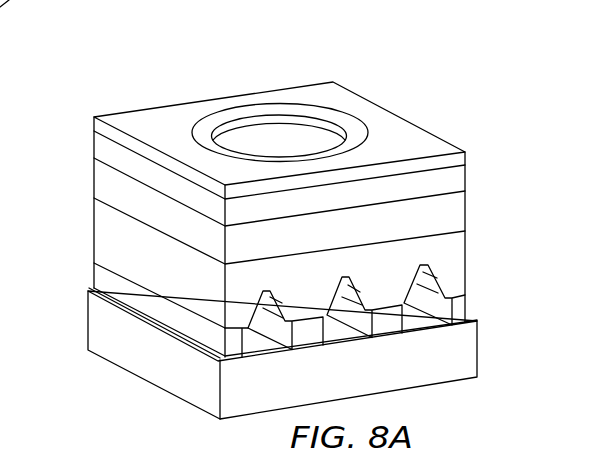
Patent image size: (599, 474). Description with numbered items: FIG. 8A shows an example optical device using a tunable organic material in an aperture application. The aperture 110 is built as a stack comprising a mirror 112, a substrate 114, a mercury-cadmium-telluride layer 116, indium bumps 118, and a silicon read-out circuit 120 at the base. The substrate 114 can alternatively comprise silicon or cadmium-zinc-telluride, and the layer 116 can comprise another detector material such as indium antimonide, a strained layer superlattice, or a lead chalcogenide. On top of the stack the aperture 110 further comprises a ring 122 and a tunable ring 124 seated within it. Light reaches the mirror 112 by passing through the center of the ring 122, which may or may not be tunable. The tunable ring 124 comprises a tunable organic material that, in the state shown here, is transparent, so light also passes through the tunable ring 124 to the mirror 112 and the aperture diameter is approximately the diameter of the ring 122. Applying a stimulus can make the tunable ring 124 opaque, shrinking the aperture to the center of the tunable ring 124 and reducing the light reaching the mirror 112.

The aperture 110 is at (380, 62).
The mirror 112 is at (85, 130).
The substrate 114 is at (468, 210).
The mercury-cadmium-telluride layer 116 is at (95, 228).
The indium bumps 118 is at (95, 275).
The silicon read-out circuit 120 is at (88, 320).
The ring 122 is at (420, 133).
The tunable ring 124 is at (213, 122).